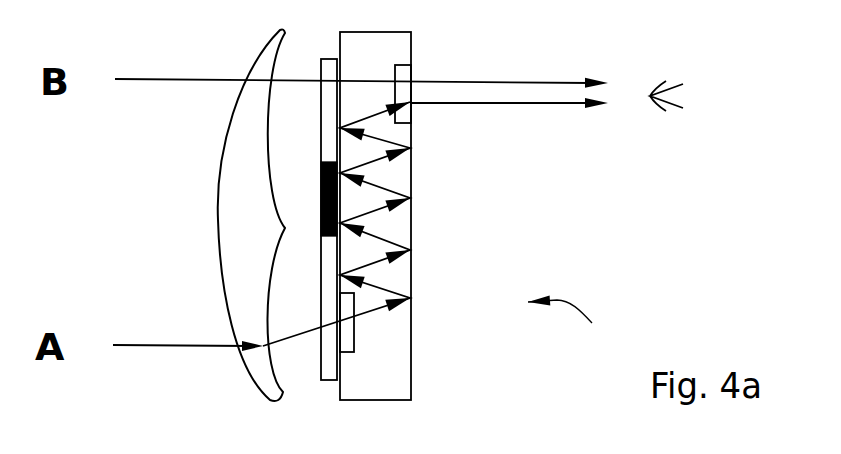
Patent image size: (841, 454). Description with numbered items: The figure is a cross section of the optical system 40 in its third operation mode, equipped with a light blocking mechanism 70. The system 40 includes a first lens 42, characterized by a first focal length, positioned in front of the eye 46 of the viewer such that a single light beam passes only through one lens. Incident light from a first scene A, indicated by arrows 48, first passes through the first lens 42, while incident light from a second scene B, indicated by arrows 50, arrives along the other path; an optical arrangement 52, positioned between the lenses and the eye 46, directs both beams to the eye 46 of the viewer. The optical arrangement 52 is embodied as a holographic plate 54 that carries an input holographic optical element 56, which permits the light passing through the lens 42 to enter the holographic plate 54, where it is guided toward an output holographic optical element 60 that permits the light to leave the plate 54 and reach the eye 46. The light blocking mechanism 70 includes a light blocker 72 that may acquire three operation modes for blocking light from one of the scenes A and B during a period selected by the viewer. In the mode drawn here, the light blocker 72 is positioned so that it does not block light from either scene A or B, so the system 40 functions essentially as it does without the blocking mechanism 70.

The optical system 40 is at (569, 327).
The first lens 42 is at (265, 380).
The eye of the viewer 46 is at (673, 110).
The arrows indicating incident light from first scene A 48 is at (147, 346).
The arrows indicating incident light from second scene B 50 is at (135, 80).
The optical arrangement 52 is at (438, 231).
The holographic plate 54 is at (400, 378).
The input holographic optical element 56 is at (348, 338).
The output holographic optical element 60 is at (400, 78).
The light blocking mechanism 70 is at (327, 348).
The light blocker 72 is at (320, 167).